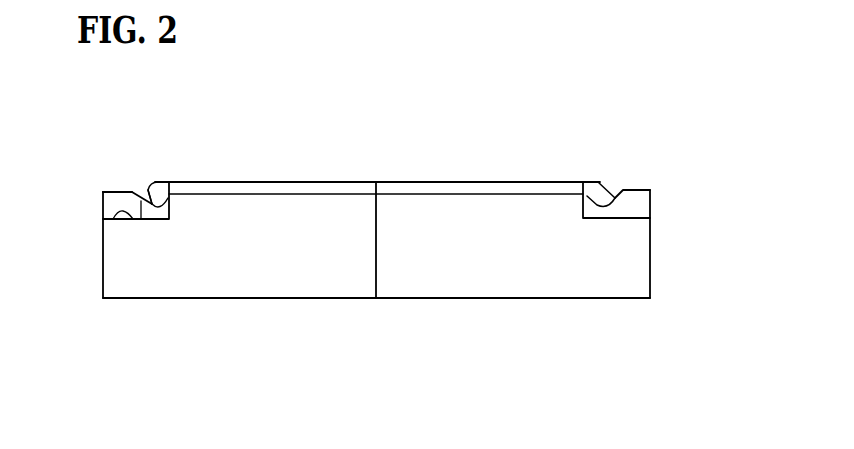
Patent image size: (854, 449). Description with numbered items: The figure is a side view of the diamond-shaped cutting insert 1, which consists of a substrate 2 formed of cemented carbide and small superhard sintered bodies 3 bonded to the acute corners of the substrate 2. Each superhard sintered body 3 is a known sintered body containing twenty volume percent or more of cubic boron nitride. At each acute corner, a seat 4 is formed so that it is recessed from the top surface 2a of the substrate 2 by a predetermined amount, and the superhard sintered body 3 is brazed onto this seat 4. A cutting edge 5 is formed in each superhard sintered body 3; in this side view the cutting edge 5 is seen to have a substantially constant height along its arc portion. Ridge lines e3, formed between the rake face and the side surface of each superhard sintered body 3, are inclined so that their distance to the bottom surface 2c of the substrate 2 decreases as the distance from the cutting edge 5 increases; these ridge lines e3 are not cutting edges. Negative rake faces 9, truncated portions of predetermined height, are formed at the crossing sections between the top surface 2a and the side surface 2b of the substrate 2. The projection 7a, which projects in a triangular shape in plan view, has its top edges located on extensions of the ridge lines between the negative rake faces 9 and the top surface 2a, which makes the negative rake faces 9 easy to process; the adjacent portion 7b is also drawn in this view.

The cutting insert 1 is at (422, 158).
The substrate 2 is at (547, 270).
The top surface 2a is at (251, 181).
The side surface 2b is at (463, 277).
The bottom surface 2c is at (309, 300).
The superhard sintered body 3 is at (92, 215).
The seat 4 is at (137, 222).
The cutting edge 5 is at (112, 191).
The projection 7a is at (155, 182).
The overhang portion 7b is at (147, 192).
The negative rake face 9 is at (352, 192).
The ridge line e3 is at (143, 222).